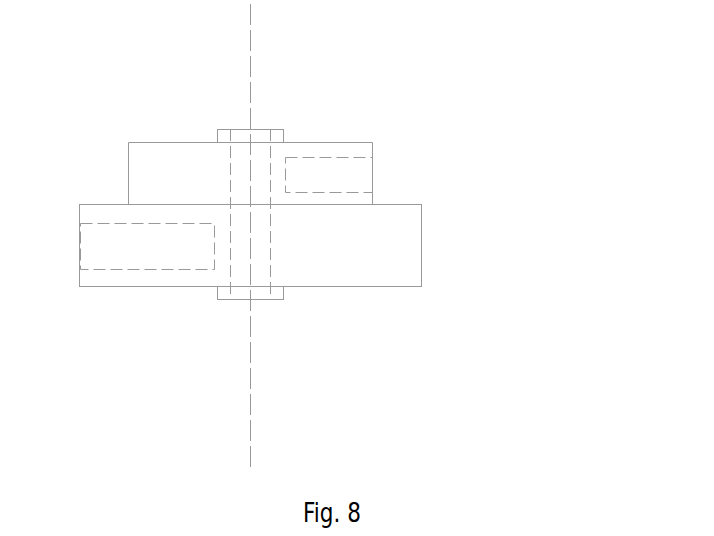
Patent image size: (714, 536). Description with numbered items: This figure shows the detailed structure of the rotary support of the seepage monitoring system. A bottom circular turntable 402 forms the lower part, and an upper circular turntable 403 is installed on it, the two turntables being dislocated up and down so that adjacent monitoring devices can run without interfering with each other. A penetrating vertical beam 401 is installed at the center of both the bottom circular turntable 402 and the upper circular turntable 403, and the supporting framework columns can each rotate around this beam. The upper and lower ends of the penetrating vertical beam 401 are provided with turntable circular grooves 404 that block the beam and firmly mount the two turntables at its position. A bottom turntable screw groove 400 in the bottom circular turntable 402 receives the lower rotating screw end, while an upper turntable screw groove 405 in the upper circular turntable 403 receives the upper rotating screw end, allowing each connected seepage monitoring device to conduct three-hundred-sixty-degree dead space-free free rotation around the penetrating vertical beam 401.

The bottom turntable screw groove 400 is at (100, 248).
The penetrating vertical beam 401 is at (270, 223).
The bottom circular turntable 402 is at (420, 286).
The upper circular turntable 403 is at (158, 163).
The turntable circular groove 404 is at (278, 133).
The upper turntable screw groove 405 is at (353, 173).